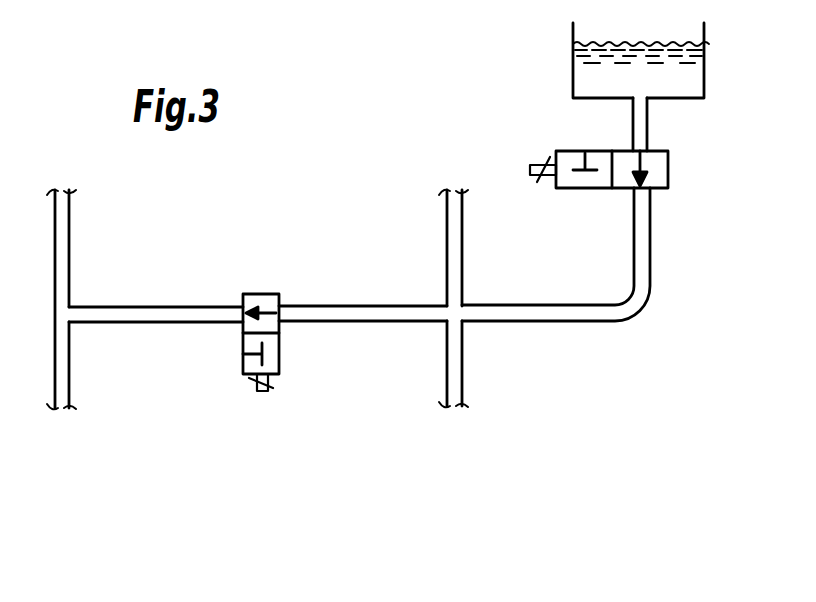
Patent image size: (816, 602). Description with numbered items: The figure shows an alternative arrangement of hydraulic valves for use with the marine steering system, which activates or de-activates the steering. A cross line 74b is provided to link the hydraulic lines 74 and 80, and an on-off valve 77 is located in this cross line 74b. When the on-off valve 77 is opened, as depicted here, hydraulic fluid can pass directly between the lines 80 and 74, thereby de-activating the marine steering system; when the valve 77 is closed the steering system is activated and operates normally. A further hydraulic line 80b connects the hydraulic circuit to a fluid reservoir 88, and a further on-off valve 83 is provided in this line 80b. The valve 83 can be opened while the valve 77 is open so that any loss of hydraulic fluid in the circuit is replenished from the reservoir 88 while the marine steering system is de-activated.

The line 74 is at (70, 216).
The cross line 74b is at (181, 305).
The on-off valve 77 is at (279, 357).
The line 80 is at (447, 214).
The further hydraulic line 80b is at (535, 305).
The further on-off valve 83 is at (668, 170).
The fluid reservoir 88 is at (573, 78).